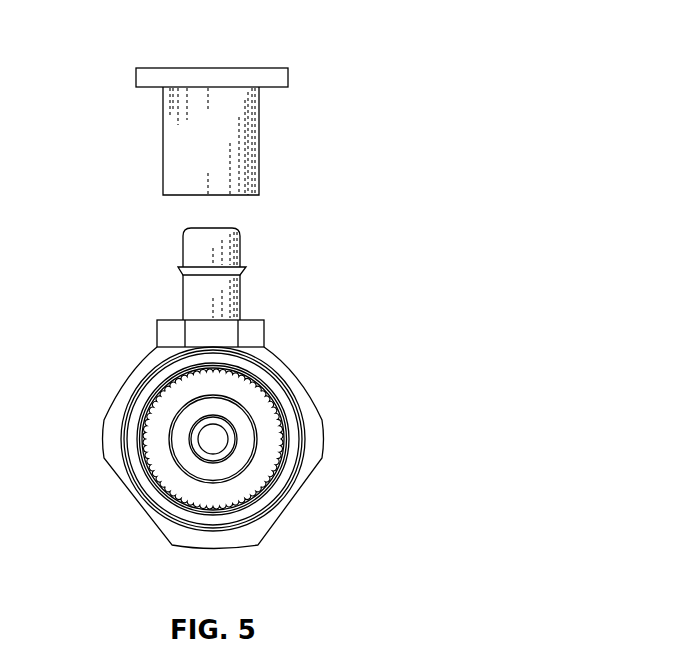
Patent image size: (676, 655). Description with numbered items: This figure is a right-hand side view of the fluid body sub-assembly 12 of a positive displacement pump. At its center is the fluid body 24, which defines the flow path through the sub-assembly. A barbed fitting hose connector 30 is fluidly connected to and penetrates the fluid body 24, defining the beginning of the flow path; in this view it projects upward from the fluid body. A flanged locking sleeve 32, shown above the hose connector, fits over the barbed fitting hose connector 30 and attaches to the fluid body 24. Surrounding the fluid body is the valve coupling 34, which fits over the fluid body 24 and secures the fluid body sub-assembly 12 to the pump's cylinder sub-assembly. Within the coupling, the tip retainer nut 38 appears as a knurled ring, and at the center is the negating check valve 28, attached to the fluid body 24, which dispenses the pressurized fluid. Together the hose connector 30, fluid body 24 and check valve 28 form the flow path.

The fluid body sub-assembly 12 is at (319, 31).
The flanged locking sleeve 32 is at (243, 68).
The barbed fitting hose connector 30 is at (241, 246).
The valve coupling 34 is at (304, 380).
The fluid body 24 is at (125, 405).
The tip retainer nut 38 is at (140, 463).
The negating check valve 28 is at (205, 462).